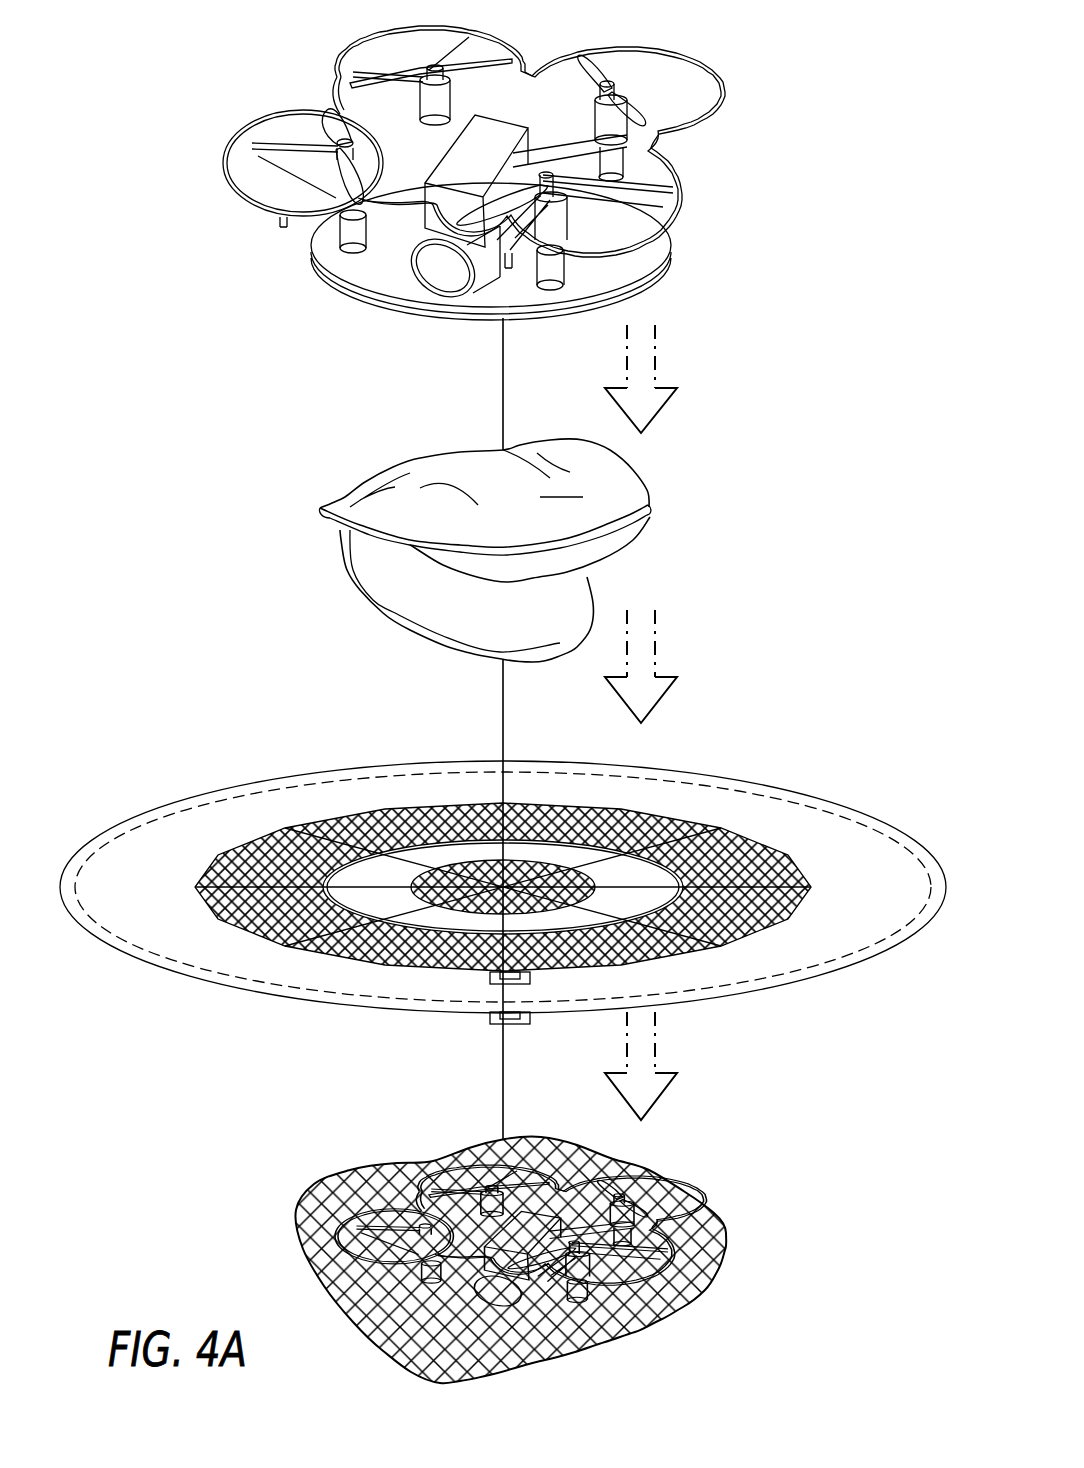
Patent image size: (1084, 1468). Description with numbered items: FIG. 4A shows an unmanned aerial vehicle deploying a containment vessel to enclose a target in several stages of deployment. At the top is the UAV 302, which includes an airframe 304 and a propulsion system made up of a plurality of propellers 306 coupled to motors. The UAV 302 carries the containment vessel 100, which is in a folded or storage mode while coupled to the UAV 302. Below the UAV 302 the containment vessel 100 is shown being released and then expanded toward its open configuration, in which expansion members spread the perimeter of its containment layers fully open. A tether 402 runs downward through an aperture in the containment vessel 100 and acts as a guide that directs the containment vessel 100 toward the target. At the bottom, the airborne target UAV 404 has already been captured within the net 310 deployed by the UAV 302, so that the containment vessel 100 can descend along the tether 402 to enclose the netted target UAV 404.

The containment vessel 100 is at (668, 255).
The UAV 302 is at (350, 34).
The airframe 304 is at (497, 135).
The propellers 306 is at (333, 133).
The net 310 is at (296, 1247).
The tether 402 is at (503, 1107).
The target UAV 404 is at (612, 1214).